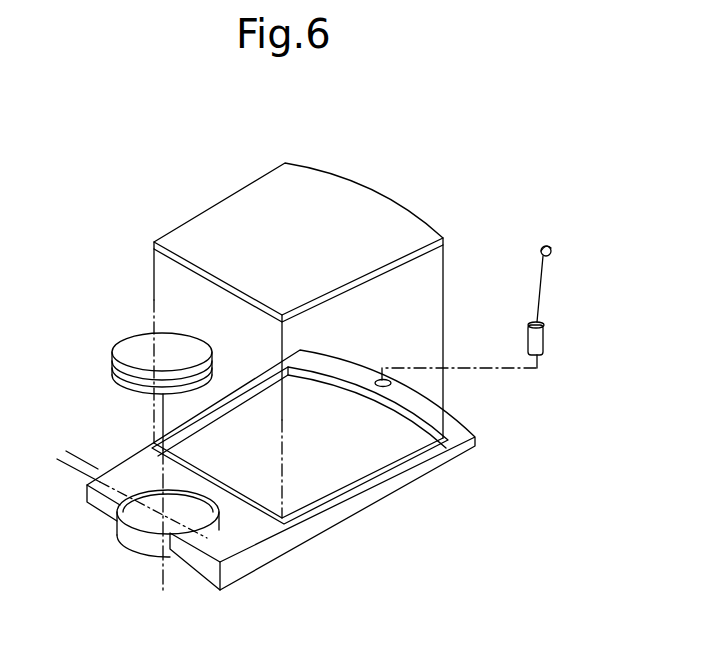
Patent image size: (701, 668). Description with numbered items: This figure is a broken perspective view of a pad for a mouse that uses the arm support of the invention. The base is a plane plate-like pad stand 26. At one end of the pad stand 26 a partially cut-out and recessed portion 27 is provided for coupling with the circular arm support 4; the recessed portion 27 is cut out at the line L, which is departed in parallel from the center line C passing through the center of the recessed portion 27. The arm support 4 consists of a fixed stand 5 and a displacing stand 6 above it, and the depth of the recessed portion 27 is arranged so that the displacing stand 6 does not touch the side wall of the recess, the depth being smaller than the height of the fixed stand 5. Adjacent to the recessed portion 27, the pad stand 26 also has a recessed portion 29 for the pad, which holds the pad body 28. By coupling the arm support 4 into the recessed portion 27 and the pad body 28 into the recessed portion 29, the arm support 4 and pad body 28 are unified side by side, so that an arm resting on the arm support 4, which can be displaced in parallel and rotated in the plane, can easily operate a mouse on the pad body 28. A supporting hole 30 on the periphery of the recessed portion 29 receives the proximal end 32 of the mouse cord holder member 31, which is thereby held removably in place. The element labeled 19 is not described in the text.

The arm support 4 is at (107, 362).
The fixed stand 5 is at (112, 378).
The displacing stand 6 is at (110, 350).
The rotary disc 19 is at (140, 340).
The pad stand 26 is at (336, 512).
The recessed portion 27 is at (150, 522).
The pad body 28 is at (370, 222).
The recessed portion for the pad 29 is at (360, 462).
The supporting hole 30 is at (393, 381).
The mouse cord holder member 31 is at (548, 258).
The proximal end 32 is at (547, 337).
The line L is at (90, 442).
The center line C is at (68, 472).